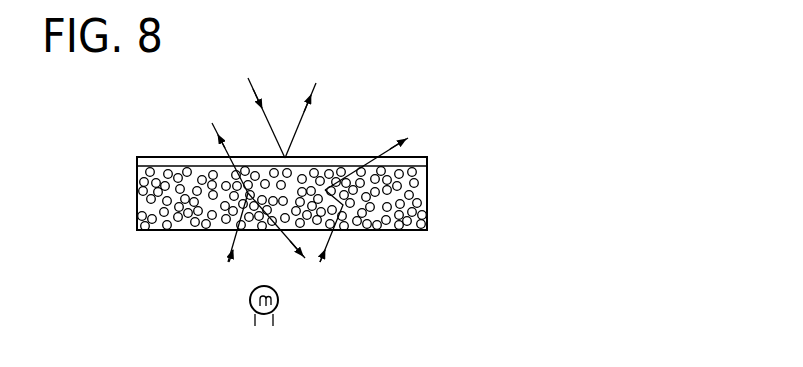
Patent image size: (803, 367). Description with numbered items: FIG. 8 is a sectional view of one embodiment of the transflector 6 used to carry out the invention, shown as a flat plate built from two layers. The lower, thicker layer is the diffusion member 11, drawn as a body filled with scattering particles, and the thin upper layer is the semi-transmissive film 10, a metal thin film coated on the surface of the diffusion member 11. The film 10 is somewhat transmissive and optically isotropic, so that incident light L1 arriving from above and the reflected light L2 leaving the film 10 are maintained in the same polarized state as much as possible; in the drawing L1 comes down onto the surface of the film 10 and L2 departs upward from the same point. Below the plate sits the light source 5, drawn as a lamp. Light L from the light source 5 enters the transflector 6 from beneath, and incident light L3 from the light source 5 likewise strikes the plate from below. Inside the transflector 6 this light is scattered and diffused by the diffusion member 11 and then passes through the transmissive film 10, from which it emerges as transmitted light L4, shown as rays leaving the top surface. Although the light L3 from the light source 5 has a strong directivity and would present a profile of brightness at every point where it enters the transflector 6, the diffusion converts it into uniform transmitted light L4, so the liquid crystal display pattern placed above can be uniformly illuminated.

The light source 5 is at (250, 301).
The transflector 6 is at (333, 192).
The semi-transmissive film 10 is at (427, 164).
The diffusion member 11 is at (427, 201).
The incident light ray L is at (233, 242).
The incident light L1 is at (261, 106).
The reflected light L2 is at (288, 175).
The incident light from the light source L3 is at (330, 240).
The transmitted light L4 is at (320, 147).